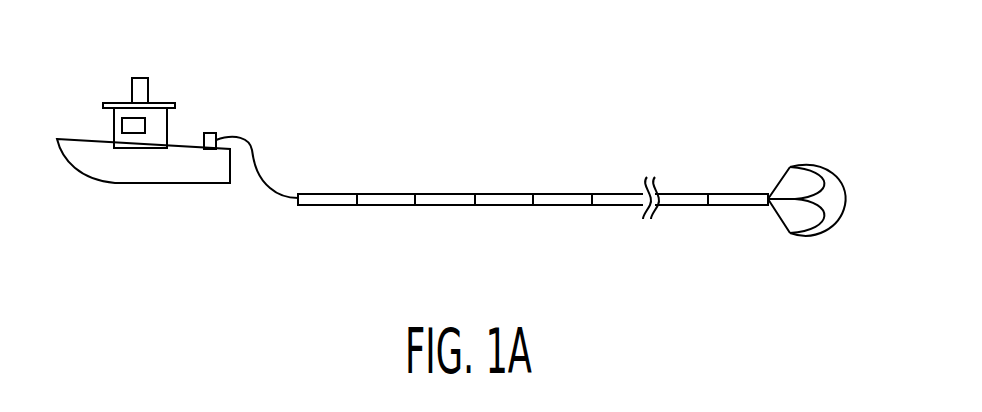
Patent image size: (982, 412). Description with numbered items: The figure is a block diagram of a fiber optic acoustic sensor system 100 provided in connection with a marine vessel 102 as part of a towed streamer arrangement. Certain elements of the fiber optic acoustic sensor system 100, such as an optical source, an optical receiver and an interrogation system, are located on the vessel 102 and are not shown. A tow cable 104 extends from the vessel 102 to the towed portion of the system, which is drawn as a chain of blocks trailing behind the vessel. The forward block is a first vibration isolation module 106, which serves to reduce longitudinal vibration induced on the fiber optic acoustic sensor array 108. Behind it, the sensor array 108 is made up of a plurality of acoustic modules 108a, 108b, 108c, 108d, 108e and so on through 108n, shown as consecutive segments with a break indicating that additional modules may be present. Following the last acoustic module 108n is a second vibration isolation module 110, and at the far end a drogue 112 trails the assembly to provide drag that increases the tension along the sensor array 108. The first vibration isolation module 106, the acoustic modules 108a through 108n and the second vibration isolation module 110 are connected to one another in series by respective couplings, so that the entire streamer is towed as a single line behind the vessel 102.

The fiber optic acoustic sensor system 100 is at (573, 90).
The marine vessel 102 is at (118, 103).
The tow cable 104 is at (252, 148).
The first vibration isolation module 106 is at (333, 194).
The fiber optic acoustic sensor array 108 is at (708, 223).
The acoustic module 108a is at (398, 194).
The acoustic module 108b is at (452, 194).
The acoustic module 108c is at (512, 194).
The acoustic module 108d is at (567, 194).
The acoustic module 108e is at (622, 194).
The acoustic module 108n is at (680, 194).
The second vibration isolation module 110 is at (740, 194).
The drogue 112 is at (835, 177).